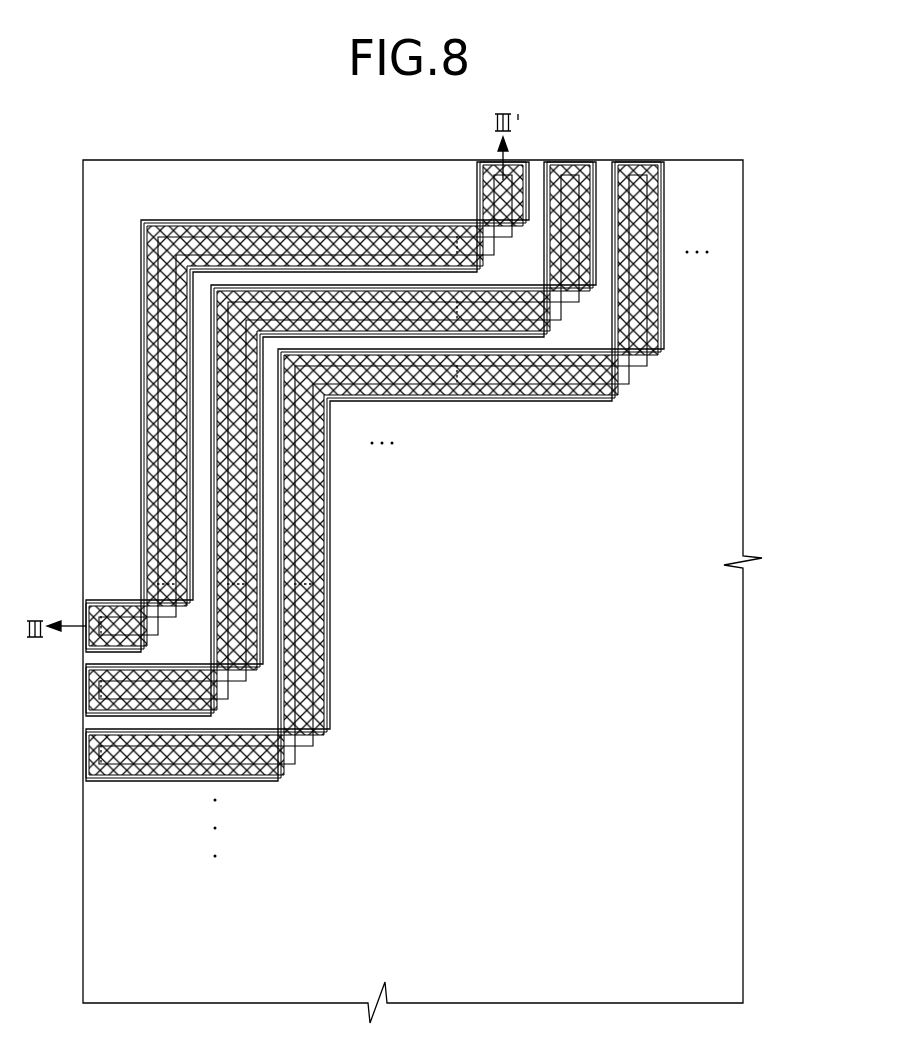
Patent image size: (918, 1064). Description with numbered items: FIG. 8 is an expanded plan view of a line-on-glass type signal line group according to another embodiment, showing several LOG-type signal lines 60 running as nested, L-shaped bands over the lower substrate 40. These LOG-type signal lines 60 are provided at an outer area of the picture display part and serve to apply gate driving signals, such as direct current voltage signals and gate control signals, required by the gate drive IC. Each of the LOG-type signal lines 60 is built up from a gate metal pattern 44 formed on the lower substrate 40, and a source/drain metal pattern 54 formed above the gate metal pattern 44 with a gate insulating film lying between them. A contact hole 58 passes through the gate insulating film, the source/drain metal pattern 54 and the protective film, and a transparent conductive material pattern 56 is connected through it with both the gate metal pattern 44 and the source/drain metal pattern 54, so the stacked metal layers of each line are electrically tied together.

The lower substrate 40 is at (723, 462).
The gate metal pattern 44 is at (453, 388).
The source/drain metal pattern 54 is at (661, 229).
The transparent conductive material pattern 56 is at (508, 388).
The contact hole 58 is at (641, 172).
The LOG-type signal line 60 is at (375, 477).